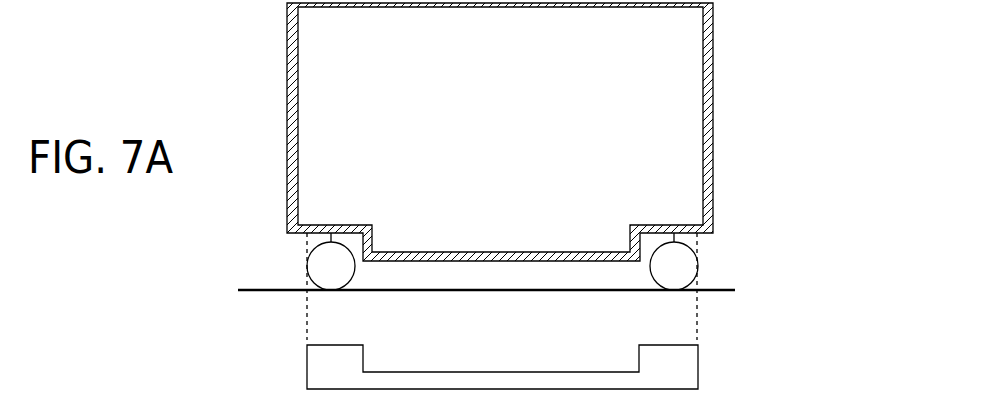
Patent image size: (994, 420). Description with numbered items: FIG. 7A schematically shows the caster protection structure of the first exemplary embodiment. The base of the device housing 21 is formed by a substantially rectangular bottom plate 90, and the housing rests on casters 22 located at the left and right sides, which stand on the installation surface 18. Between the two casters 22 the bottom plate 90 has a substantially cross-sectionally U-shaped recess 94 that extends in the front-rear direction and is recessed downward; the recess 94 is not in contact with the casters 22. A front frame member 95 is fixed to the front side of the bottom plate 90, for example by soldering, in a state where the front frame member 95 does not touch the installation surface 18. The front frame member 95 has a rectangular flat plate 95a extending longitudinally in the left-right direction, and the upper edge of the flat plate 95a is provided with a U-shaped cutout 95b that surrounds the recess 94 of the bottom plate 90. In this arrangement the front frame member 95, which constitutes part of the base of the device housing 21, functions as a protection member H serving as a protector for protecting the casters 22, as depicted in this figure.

The device housing 21 is at (714, 128).
The casters 22 is at (711, 258).
The installation surface 18 is at (262, 288).
The recess 94 is at (513, 251).
The bottom plate 90 is at (658, 226).
The front frame member 95 is at (710, 371).
The protection member H is at (568, 380).
The flat plate 95a is at (327, 368).
The cutout 95b is at (502, 371).